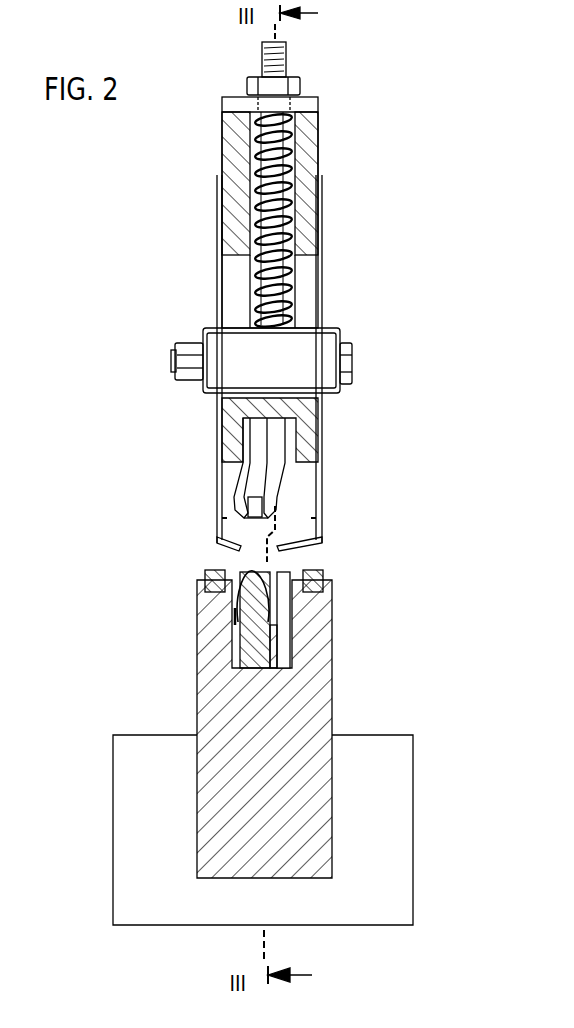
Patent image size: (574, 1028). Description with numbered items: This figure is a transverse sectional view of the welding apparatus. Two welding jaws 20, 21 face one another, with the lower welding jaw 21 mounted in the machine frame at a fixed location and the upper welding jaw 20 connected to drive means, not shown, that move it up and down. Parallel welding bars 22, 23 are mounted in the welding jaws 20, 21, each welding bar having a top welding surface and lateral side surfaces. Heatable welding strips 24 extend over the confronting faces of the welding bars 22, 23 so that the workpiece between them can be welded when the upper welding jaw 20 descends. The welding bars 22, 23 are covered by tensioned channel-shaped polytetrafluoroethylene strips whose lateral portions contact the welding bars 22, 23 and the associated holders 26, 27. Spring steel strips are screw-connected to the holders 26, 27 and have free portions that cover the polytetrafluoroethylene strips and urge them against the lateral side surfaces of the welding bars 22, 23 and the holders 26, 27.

The welding jaw 20 is at (230, 238).
The welding jaw 21 is at (268, 813).
The welding bar 22 is at (246, 515).
The welding bar 23 is at (247, 576).
The heatable welding strips 24 is at (258, 523).
The holder 26 is at (250, 431).
The holder 27 is at (259, 672).